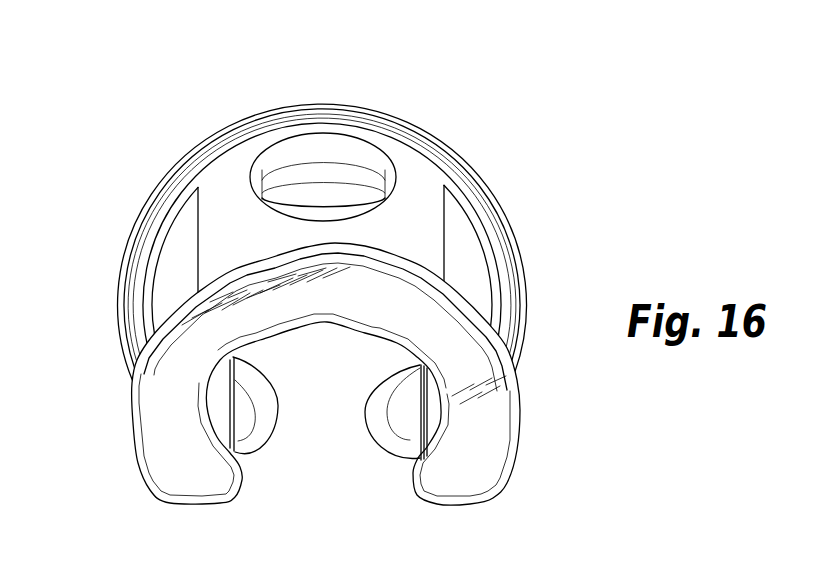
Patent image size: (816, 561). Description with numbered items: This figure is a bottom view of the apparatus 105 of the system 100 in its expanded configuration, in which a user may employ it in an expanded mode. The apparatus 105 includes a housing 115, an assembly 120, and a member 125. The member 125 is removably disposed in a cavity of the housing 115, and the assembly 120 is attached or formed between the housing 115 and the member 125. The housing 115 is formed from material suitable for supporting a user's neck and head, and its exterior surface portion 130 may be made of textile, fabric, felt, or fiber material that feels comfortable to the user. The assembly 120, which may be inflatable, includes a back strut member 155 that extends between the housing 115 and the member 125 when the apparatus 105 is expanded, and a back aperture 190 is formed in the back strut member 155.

The system 100 is at (325, 268).
The apparatus 105 is at (475, 138).
The housing 115 is at (376, 108).
The assembly 120 is at (118, 327).
The member 125 is at (519, 472).
The exterior surface portion 130 is at (380, 433).
The back strut member 155 is at (222, 178).
The back aperture 190 is at (322, 204).